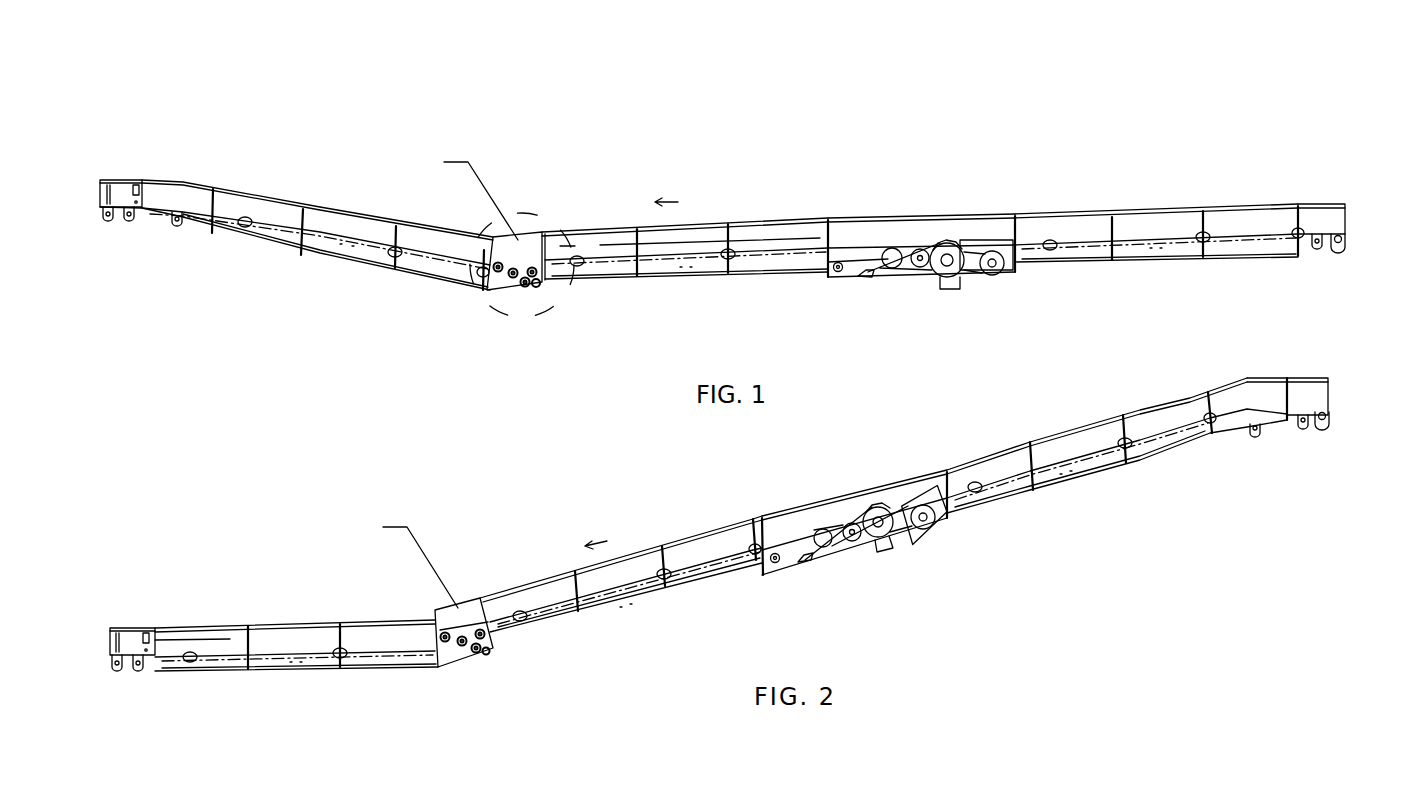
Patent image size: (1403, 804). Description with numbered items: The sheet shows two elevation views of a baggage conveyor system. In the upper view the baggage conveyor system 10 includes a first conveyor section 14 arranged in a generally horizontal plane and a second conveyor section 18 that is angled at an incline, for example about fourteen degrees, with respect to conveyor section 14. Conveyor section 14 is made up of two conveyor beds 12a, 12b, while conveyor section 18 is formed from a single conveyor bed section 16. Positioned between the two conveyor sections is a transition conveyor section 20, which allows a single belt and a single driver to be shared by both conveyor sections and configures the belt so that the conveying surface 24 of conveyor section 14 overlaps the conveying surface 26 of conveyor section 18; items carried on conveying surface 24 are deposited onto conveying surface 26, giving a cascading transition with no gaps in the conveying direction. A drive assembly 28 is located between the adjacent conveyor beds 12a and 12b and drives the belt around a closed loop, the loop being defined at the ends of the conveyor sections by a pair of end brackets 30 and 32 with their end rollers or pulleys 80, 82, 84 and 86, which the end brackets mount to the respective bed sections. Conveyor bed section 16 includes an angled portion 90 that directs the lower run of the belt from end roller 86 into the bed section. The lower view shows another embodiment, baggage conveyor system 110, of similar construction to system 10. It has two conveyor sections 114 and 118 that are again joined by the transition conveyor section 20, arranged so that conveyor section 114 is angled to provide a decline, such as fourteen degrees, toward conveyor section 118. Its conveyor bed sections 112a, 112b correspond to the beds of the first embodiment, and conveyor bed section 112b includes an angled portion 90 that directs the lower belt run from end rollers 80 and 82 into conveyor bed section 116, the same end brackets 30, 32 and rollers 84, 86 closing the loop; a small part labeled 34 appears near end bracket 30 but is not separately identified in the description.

In FIG. 1, the baggage conveyor system 10 is at (1018, 106).
In FIG. 1, the conveyor bed 12a is at (630, 232).
In FIG. 1, the conveyor bed 12b is at (1053, 205).
In FIG. 1, the first conveyor section 14 is at (1150, 128).
In FIG. 1, the conveyor bed section 16 is at (316, 196).
In FIG. 1, the second conveyor section 18 is at (261, 160).
In FIG. 1, the transition conveyor section 20 is at (472, 306).
In FIG. 2, the transition conveyor section 20 is at (475, 589).
In FIG. 1, the conveying surface 24 is at (601, 255).
In FIG. 1, the conveying surface 26 is at (202, 200).
In FIG. 1, the drive assembly 28 is at (907, 209).
In FIG. 2, the drive assembly 28 is at (839, 574).
In FIG. 1, the end bracket 30 is at (1333, 240).
In FIG. 2, the end bracket 30 is at (1318, 393).
In FIG. 1, the end bracket 32 is at (103, 224).
In FIG. 2, the end bracket 32 is at (134, 627).
In FIG. 2, the hook 34 is at (1257, 434).
In FIG. 1, the end roller 80 is at (1347, 238).
In FIG. 2, the end roller 80 is at (1330, 418).
In FIG. 1, the end roller 82 is at (1315, 248).
In FIG. 2, the end roller 82 is at (1303, 425).
In FIG. 2, the end roller 84 is at (112, 678).
In FIG. 2, the end roller 86 is at (141, 672).
In FIG. 2, the angled portion 90 is at (1262, 378).
In FIG. 2, the baggage conveyor system 110 is at (1023, 415).
In FIG. 2, the conveyor frame section 112a is at (666, 570).
In FIG. 2, the conveyor bed section 112b is at (1185, 465).
In FIG. 2, the conveyor section 114 is at (1143, 393).
In FIG. 2, the conveyor bed section 116 is at (322, 677).
In FIG. 2, the conveyor section 118 is at (301, 600).